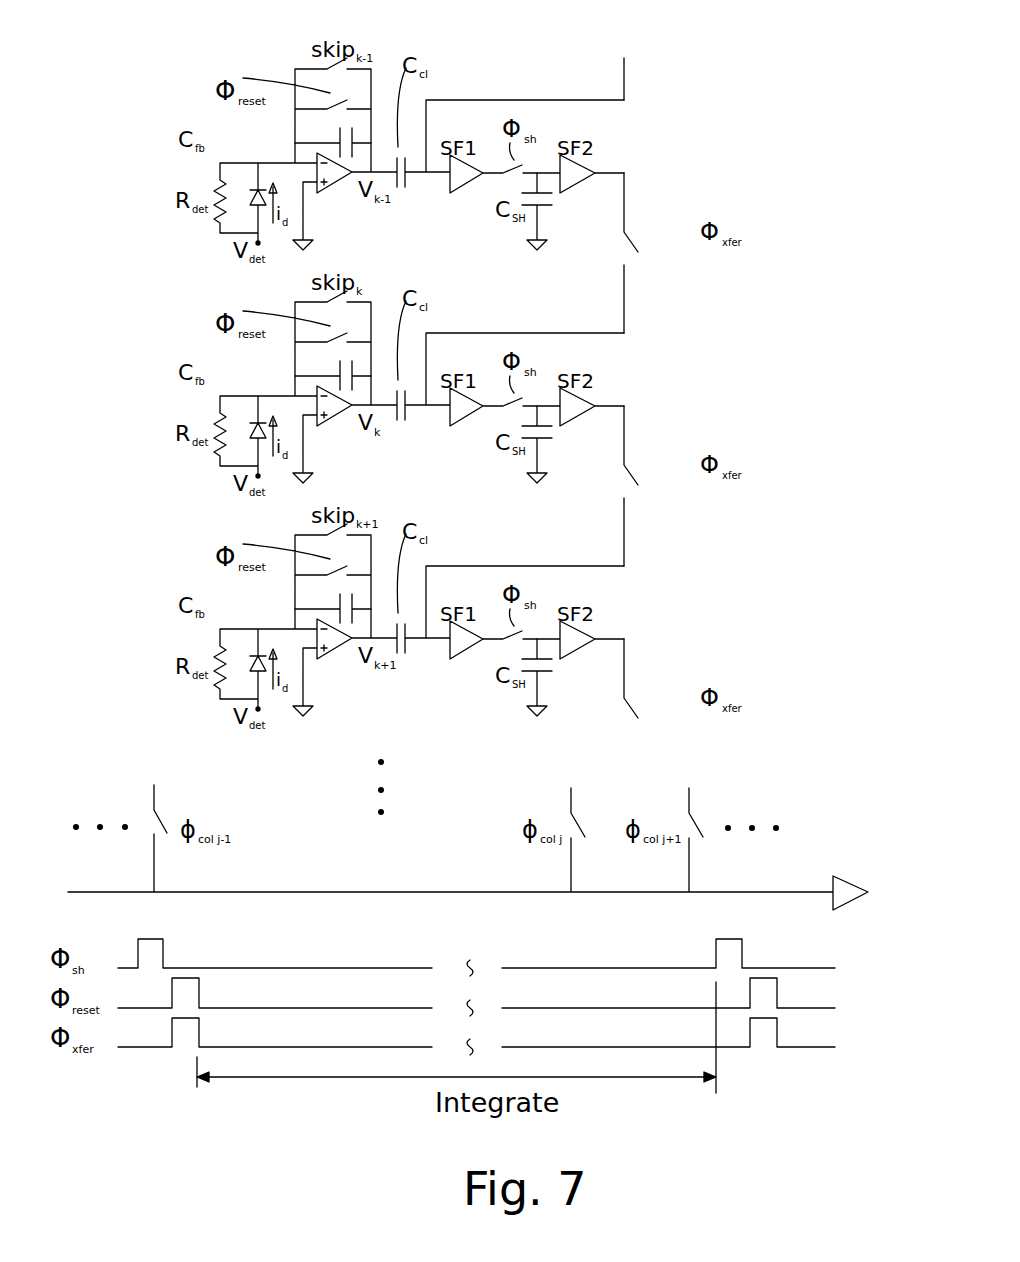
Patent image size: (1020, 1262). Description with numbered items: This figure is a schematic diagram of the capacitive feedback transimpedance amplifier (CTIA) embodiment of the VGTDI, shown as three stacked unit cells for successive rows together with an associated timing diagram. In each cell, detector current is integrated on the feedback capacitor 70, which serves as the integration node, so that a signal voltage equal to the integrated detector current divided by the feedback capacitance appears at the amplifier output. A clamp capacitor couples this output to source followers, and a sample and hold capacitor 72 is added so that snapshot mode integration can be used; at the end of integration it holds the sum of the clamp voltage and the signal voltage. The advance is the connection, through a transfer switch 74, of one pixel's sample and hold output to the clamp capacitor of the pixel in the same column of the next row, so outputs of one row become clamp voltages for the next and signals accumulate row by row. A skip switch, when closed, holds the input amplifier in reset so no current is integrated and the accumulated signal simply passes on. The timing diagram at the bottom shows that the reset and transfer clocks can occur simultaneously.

The feedback capacitor 70 is at (330, 132).
The sample and hold capacitor 72 is at (550, 205).
The transfer switch 74 is at (690, 230).